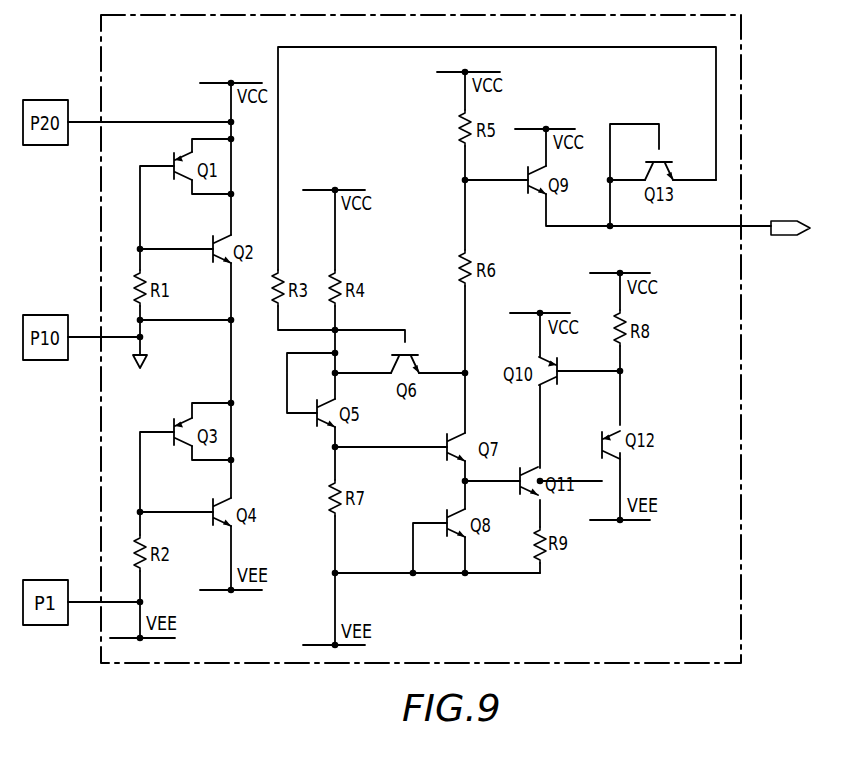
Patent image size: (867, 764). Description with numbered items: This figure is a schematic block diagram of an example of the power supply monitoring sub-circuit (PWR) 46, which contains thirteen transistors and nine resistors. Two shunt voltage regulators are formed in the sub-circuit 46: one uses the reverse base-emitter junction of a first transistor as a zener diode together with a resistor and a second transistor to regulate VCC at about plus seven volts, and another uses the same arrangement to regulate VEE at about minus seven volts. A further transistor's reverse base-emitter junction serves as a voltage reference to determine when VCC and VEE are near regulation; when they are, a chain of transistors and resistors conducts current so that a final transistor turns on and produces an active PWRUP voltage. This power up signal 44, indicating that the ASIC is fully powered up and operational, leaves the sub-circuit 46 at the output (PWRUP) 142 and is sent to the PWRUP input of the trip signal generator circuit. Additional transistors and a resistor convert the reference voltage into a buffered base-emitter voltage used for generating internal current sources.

The output (PWRUP) 142 is at (609, 229).
The power up signal 44 is at (745, 222).
The power supply monitoring sub-circuit (PWR) 46 is at (741, 335).